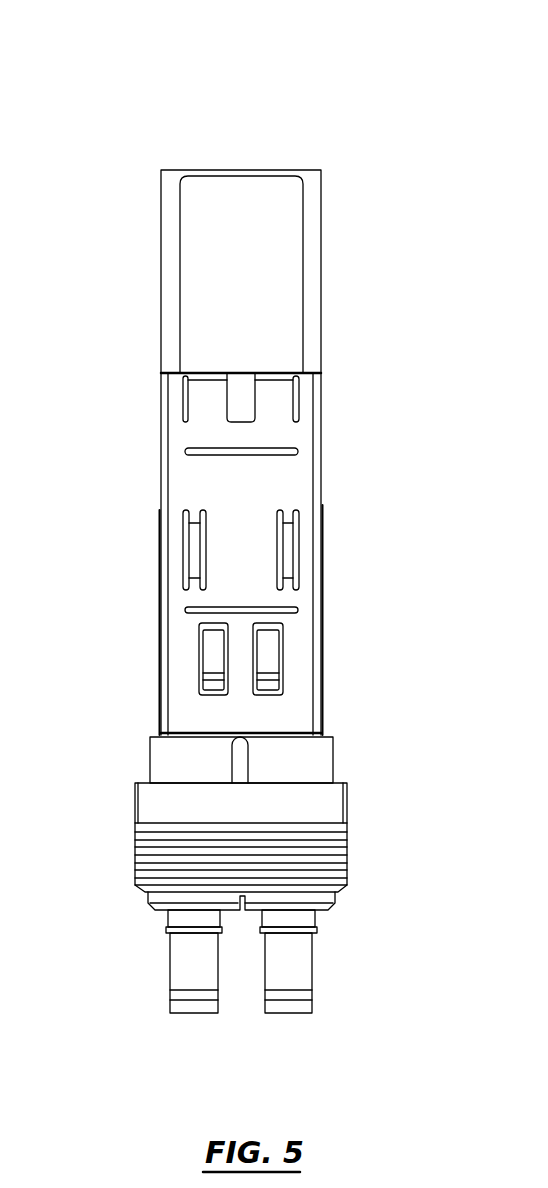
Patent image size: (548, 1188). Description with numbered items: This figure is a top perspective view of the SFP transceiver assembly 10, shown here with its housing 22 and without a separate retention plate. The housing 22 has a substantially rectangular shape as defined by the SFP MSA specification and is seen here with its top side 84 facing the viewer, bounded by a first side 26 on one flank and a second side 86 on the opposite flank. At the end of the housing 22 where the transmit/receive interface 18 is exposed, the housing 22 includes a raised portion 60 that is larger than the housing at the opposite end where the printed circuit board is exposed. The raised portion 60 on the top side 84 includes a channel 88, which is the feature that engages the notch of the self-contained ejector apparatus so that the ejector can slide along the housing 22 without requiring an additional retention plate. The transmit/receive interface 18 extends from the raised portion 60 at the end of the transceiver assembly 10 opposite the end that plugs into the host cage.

The SFP transceiver assembly 10 is at (274, 79).
The housing 22 is at (350, 346).
The top side 84 is at (272, 303).
The first side 26 is at (160, 510).
The second side 86 is at (322, 492).
The raised portion 60 is at (329, 762).
The channel 88 is at (240, 754).
The transmit/receive interface 18 is at (339, 968).